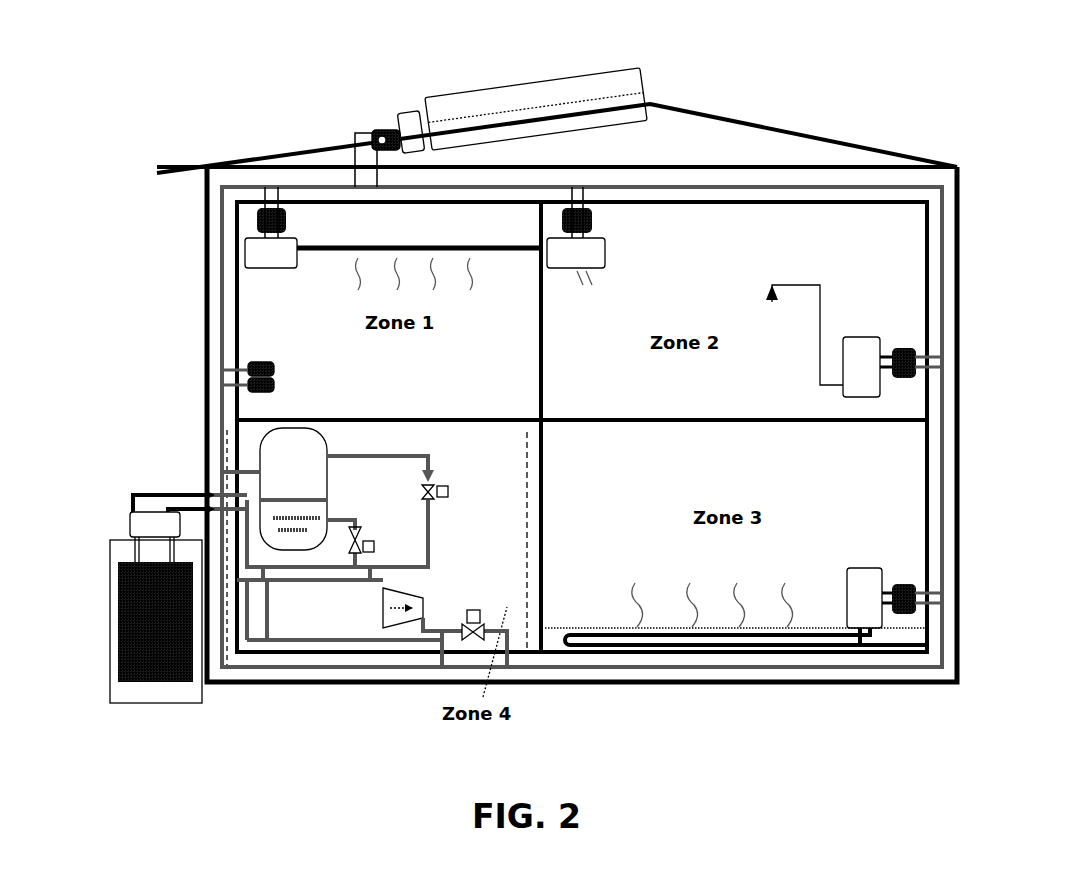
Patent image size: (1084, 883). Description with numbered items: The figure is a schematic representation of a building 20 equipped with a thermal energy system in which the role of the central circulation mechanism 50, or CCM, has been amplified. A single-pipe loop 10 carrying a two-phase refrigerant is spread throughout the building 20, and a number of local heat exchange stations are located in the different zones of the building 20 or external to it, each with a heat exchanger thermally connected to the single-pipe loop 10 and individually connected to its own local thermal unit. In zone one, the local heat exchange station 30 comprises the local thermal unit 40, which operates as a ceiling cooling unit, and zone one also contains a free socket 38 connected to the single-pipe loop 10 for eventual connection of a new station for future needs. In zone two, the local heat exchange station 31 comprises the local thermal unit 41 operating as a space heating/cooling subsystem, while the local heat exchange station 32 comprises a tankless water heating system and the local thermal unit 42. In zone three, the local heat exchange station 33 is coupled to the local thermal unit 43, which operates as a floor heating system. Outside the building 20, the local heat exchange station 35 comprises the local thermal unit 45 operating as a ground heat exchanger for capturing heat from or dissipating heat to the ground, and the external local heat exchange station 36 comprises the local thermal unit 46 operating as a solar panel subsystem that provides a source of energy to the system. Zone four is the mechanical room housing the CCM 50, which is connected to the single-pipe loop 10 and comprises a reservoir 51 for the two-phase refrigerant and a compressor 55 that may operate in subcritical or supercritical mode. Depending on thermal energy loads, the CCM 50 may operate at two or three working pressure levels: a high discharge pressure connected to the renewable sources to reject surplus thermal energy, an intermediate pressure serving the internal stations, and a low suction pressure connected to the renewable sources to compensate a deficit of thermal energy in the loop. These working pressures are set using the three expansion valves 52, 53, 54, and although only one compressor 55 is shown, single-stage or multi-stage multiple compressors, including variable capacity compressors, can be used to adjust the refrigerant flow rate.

The single-pipe loop 10 is at (900, 187).
The building 20 is at (173, 170).
The local heat exchange station 30 is at (276, 270).
The local heat exchange station 31 is at (607, 252).
The local heat exchange station 32 is at (865, 337).
The local heat exchange station 33 is at (865, 568).
The local heat exchange station 35 is at (130, 514).
The external local heat exchange station 36 is at (402, 112).
The free socket 38 is at (276, 374).
The local thermal unit 40 is at (423, 246).
The local thermal unit 41 is at (563, 270).
The local thermal unit 42 is at (772, 312).
The local thermal unit 43 is at (600, 635).
The local thermal unit 45 is at (110, 622).
The local thermal unit 46 is at (516, 88).
The central circulation mechanism 50 is at (493, 541).
The reservoir 51 is at (274, 489).
The expansion valve 52 is at (459, 492).
The expansion valve 53 is at (383, 541).
The expansion valve 54 is at (478, 606).
The compressor 55 is at (378, 608).